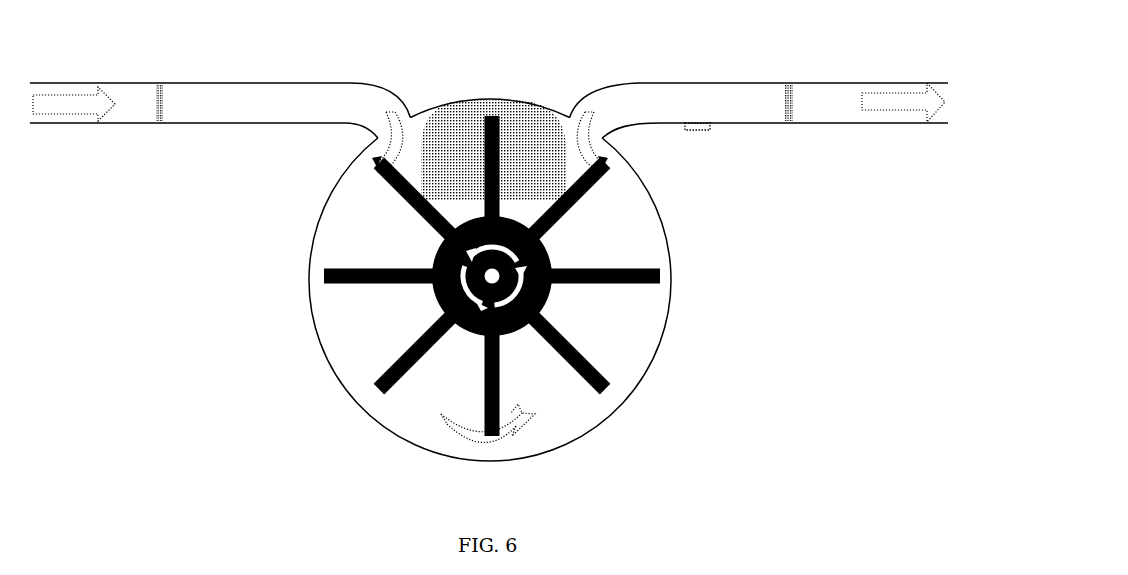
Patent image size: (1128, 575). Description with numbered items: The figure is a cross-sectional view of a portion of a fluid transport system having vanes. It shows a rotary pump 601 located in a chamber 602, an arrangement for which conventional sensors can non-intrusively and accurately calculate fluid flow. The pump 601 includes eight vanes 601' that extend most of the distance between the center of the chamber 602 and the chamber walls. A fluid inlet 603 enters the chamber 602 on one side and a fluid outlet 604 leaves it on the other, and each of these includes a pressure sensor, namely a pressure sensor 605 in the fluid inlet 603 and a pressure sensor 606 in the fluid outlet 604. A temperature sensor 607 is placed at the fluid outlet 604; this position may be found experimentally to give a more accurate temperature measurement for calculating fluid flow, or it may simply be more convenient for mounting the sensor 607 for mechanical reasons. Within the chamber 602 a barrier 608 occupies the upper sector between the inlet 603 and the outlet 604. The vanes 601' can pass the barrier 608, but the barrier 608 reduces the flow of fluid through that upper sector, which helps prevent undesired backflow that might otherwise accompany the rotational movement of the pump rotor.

The rotary pump 601 is at (531, 276).
The vanes 601' is at (494, 282).
The chamber 602 is at (327, 308).
The fluid inlet 603 is at (295, 95).
The fluid outlet 604 is at (658, 90).
The pressure sensor 605 is at (160, 123).
The pressure sensor 606 is at (787, 117).
The temperature sensor 607 is at (695, 130).
The barrier 608 is at (515, 122).